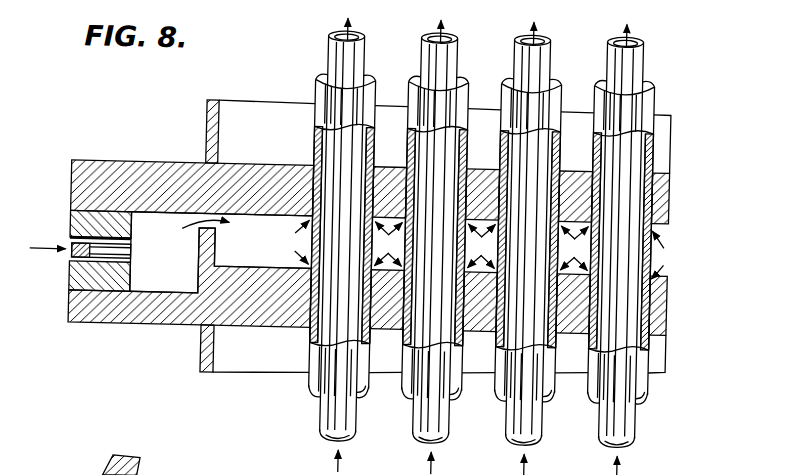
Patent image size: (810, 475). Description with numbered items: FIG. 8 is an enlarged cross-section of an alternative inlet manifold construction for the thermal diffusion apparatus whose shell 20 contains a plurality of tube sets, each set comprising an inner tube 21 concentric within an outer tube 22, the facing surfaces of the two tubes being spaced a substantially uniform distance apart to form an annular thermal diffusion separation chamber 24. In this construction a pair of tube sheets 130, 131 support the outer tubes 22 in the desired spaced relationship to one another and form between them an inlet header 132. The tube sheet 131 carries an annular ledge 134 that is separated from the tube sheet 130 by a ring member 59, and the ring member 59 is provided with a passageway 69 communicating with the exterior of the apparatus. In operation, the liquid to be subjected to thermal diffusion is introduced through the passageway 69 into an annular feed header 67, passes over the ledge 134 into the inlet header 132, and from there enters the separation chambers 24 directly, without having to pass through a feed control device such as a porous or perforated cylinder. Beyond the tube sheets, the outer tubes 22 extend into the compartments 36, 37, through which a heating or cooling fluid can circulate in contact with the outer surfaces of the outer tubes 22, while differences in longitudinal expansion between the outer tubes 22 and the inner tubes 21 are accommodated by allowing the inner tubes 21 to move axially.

The shell 20 is at (204, 113).
The inner tube 21 is at (324, 41).
The outer tube 22 is at (312, 90).
The thermal diffusion separation chamber 24 is at (314, 366).
The compartment 36 is at (240, 94).
The compartment 37 is at (236, 351).
The ring member 59 is at (77, 226).
The annular feed header 67 is at (131, 228).
The passageway 69 is at (100, 263).
The tube sheet 130 is at (168, 177).
The tube sheet 131 is at (121, 313).
The inlet header 132 is at (260, 252).
The annular ledge 134 is at (204, 250).